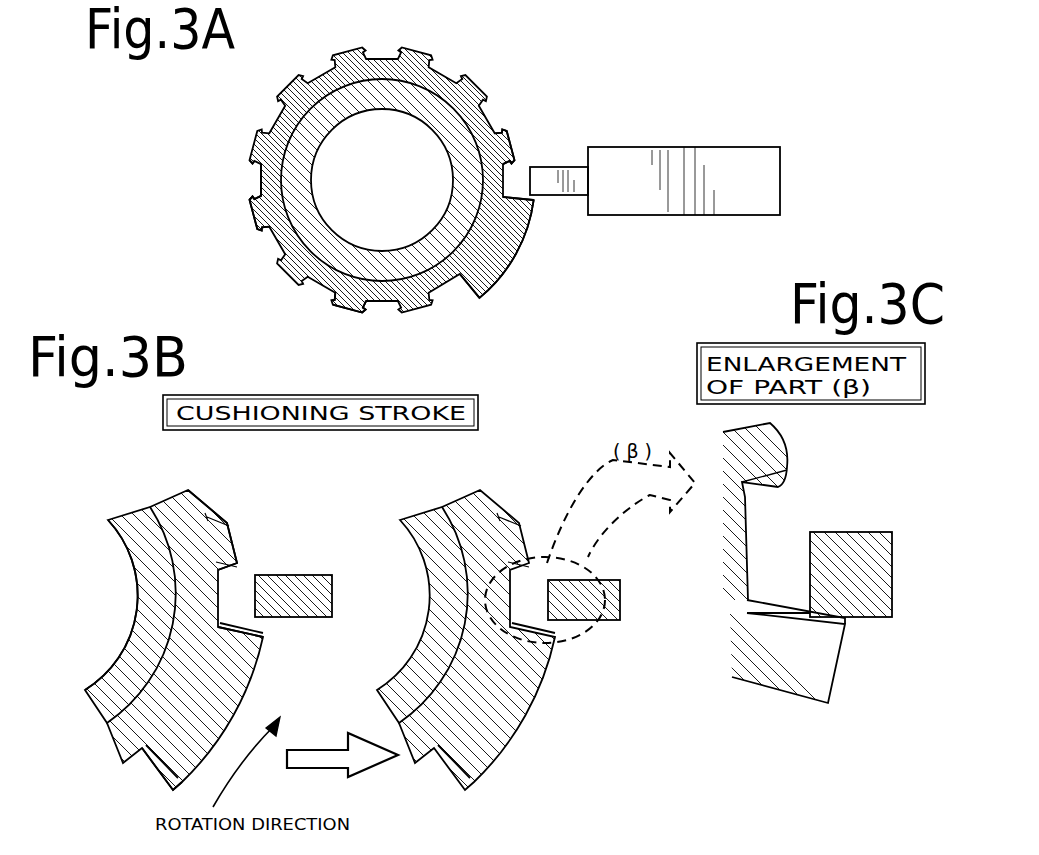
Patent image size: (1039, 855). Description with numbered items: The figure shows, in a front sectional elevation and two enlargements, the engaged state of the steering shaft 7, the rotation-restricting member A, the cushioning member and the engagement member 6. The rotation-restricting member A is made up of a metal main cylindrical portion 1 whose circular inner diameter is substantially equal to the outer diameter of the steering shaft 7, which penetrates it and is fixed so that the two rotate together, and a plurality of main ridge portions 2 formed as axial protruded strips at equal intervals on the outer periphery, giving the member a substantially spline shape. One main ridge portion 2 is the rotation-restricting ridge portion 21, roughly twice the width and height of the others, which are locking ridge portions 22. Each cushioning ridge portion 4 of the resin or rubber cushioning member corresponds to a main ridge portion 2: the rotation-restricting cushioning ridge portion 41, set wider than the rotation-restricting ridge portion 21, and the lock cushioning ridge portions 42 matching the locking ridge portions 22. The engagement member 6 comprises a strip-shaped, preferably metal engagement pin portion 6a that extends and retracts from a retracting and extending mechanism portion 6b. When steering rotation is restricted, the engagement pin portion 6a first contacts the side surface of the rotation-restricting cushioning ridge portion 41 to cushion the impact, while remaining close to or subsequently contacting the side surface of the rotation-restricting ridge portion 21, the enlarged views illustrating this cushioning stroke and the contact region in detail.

In FIG. 3A, the main cylindrical portion 1 is at (404, 202).
In FIG. 3A, the main ridge portion 2 is at (377, 218).
In FIG. 3B, the main ridge portion 2 is at (286, 641).
In FIG. 3C, the main ridge portion 2 is at (738, 585).
In FIG. 3A, the rotation-restricting ridge portion 21 is at (506, 256).
In FIG. 3B, the rotation-restricting ridge portion 21 is at (250, 658).
In FIG. 3C, the rotation-restricting ridge portion 21 is at (843, 656).
In FIG. 3A, the locking ridge portion 22 is at (518, 140).
In FIG. 3B, the locking ridge portion 22 is at (229, 537).
In FIG. 3C, the locking ridge portion 22 is at (773, 432).
In FIG. 3A, the cushioning ridge portion 4 is at (398, 238).
In FIG. 3B, the cushioning ridge portion 4 is at (224, 655).
In FIG. 3C, the cushioning ridge portion 4 is at (813, 540).
In FIG. 3A, the rotation-restricting cushioning ridge portion 41 is at (505, 186).
In FIG. 3B, the rotation-restricting cushioning ridge portion 41 is at (266, 634).
In FIG. 3C, the rotation-restricting cushioning ridge portion 41 is at (795, 606).
In FIG. 3A, the lock cushioning ridge portion 42 is at (249, 200).
In FIG. 3B, the lock cushioning ridge portion 42 is at (214, 512).
In FIG. 3C, the lock cushioning ridge portion 42 is at (790, 490).
In FIG. 3A, the engagement member 6 is at (655, 174).
In FIG. 3B, the engagement member 6 is at (294, 576).
In FIG. 3A, the engagement pin portion 6a is at (556, 197).
In FIG. 3B, the engagement pin portion 6a is at (307, 574).
In FIG. 3C, the engagement pin portion 6a is at (824, 543).
In FIG. 3A, the retracting and extending mechanism portion 6b is at (722, 206).
In FIG. 3A, the steering shaft 7 is at (355, 114).
In FIG. 3B, the steering shaft 7 is at (137, 600).
In FIG. 3A, the rotation-restricting member A is at (493, 108).